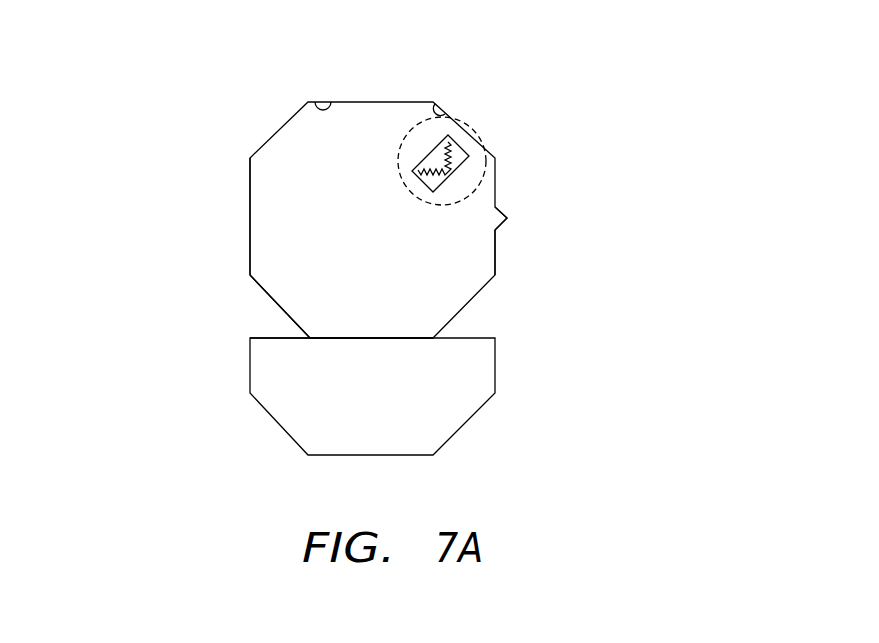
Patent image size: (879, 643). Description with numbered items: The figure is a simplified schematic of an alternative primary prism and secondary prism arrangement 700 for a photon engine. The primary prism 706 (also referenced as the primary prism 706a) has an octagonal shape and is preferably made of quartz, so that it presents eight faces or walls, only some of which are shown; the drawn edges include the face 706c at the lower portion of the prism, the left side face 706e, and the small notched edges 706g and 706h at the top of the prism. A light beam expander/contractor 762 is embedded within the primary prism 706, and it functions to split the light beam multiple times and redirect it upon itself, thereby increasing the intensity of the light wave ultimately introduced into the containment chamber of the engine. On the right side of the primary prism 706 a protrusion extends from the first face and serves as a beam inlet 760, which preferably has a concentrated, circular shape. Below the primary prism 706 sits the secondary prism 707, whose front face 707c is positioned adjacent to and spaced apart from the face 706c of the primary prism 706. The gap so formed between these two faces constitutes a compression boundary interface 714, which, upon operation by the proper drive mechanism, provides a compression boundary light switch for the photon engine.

The blade assembly 700 is at (147, 92).
The primary prism 706 is at (353, 117).
The primary prism 706a is at (497, 258).
The face of the primary prism 706c is at (332, 337).
The left side edge of blade 706e is at (250, 202).
The top notch of blade 706g is at (324, 100).
The corner notch of blade 706h is at (444, 112).
The secondary prism 707 is at (380, 448).
The front face of the secondary prism 707c is at (330, 340).
The compression boundary interface 714 is at (387, 336).
The beam inlet 760 is at (498, 206).
The light beam expander/contractor 762 is at (466, 153).